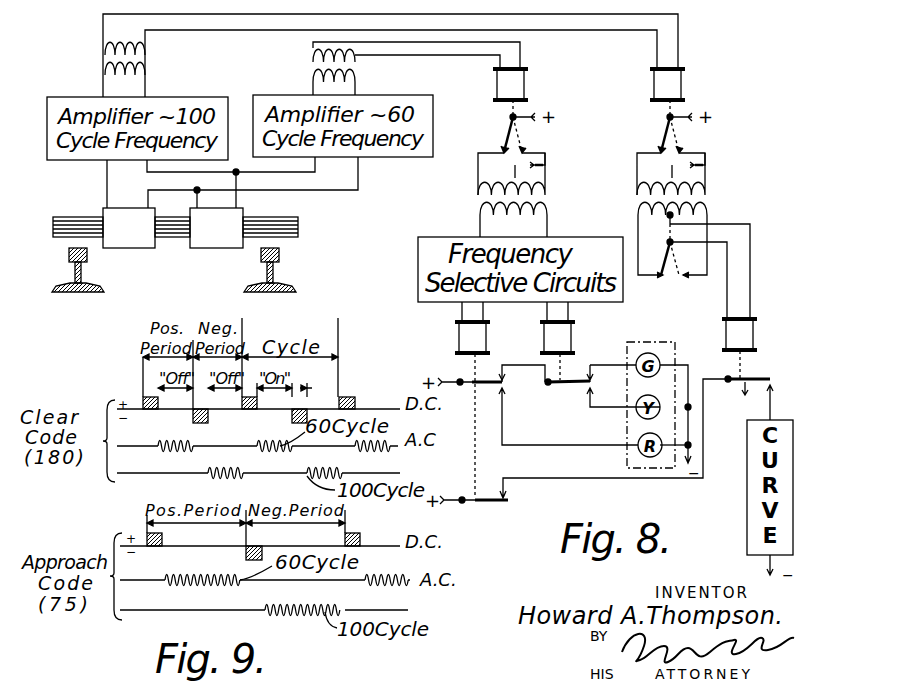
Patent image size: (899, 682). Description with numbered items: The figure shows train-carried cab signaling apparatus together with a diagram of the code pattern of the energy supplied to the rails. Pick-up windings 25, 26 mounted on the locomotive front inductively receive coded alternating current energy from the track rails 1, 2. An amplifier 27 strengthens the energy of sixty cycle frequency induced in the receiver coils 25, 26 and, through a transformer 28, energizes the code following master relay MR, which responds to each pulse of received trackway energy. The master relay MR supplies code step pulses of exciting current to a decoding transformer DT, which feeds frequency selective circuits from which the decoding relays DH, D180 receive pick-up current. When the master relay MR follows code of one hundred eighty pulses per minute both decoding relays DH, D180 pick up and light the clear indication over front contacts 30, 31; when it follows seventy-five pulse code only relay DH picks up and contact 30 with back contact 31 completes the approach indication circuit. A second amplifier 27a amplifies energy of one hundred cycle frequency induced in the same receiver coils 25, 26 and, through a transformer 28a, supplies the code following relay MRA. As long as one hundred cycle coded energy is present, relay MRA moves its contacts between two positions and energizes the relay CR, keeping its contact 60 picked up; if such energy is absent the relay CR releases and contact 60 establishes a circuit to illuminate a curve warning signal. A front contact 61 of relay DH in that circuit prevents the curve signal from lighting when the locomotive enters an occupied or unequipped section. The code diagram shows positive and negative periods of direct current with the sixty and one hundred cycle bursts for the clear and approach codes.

The track rail 1 is at (88, 268).
The track rail 2 is at (258, 268).
The pick-up winding 25 is at (104, 209).
The pick-up winding 26 is at (210, 240).
The amplifier 27 is at (298, 92).
The transformer 28 is at (310, 63).
The amplifier 27a is at (152, 77).
The transformer 28a is at (147, 58).
The code following master relay MR is at (540, 80).
The code following relay MRA is at (698, 80).
The decoding transformer DT is at (546, 196).
The decoding relay DH is at (497, 333).
The decoding relay D180 is at (576, 344).
The relay CR is at (726, 335).
The front contact 30 is at (522, 384).
The front contact 31 is at (573, 389).
The contact 60 is at (767, 371).
The front contact 61 is at (497, 503).